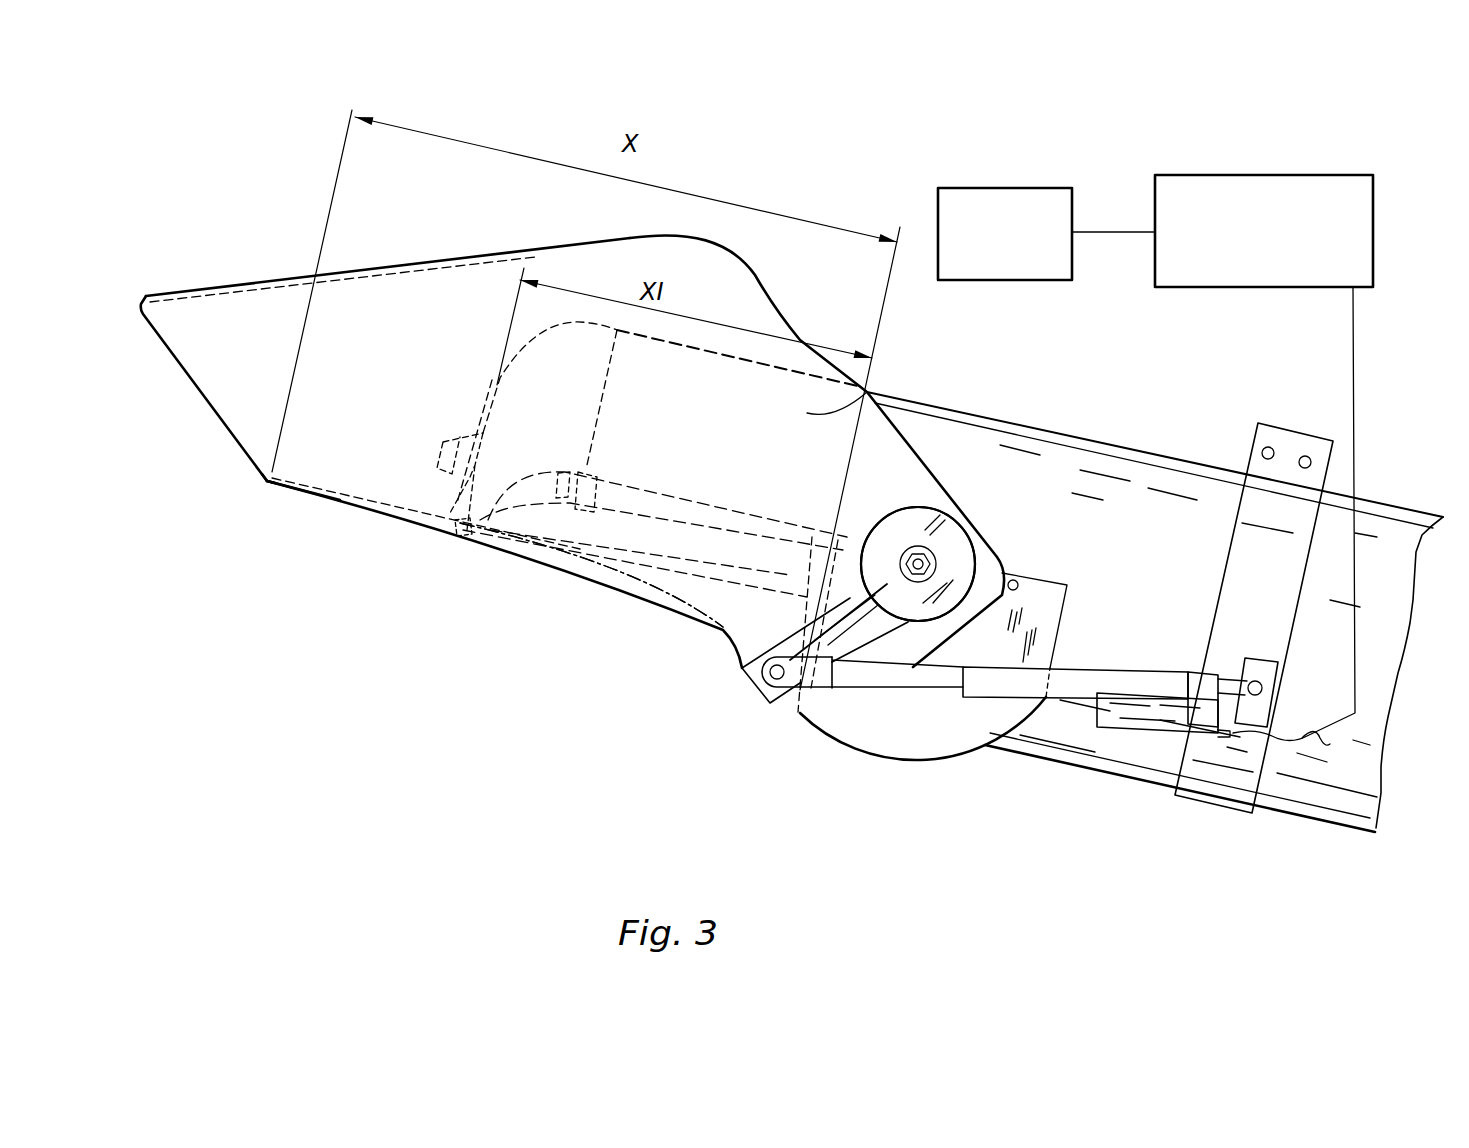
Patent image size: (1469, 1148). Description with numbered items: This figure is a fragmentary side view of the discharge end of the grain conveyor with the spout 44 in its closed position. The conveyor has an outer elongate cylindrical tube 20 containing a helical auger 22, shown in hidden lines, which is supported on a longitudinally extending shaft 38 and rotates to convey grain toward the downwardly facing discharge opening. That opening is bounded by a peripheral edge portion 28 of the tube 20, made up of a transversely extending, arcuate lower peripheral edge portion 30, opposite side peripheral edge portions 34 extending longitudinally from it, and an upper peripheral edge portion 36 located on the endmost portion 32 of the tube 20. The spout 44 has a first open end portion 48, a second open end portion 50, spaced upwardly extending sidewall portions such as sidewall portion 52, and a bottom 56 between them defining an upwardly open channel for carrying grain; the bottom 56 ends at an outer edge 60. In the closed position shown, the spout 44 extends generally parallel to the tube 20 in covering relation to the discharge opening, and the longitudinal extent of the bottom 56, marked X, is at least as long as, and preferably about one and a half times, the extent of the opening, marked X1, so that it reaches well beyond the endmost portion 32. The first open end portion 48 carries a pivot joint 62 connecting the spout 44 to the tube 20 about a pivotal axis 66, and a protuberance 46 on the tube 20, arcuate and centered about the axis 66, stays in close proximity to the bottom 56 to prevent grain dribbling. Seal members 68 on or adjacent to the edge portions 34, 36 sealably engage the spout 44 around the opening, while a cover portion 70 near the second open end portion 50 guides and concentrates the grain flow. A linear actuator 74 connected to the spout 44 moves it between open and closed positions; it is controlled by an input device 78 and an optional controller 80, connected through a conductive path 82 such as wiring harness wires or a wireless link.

The tube 20 is at (1387, 510).
The helical auger 22 is at (803, 600).
The peripheral edge portion 28 is at (707, 568).
The side peripheral edge portions 34 is at (707, 568).
The lower peripheral edge portion 30 is at (772, 707).
The endmost portion 32 is at (493, 400).
The upper peripheral edge portion 36 is at (463, 536).
The shaft 38 is at (445, 442).
The spout 44 is at (298, 493).
The protuberance 46 is at (840, 740).
The first open end portion 48 is at (795, 718).
The second open end portion 50 is at (217, 420).
The sidewall portion 52 is at (867, 392).
The bottom 56 is at (397, 515).
The outer edge 60 is at (260, 476).
The pivot joint 62 is at (927, 553).
The pivotal axis 66 is at (927, 553).
The seal member 68 is at (687, 508).
The cover portion 70 is at (208, 290).
The actuator 74 is at (1112, 730).
The input device 78 is at (1002, 188).
The controller 80 is at (1247, 175).
The conductive path 82 is at (1108, 233).